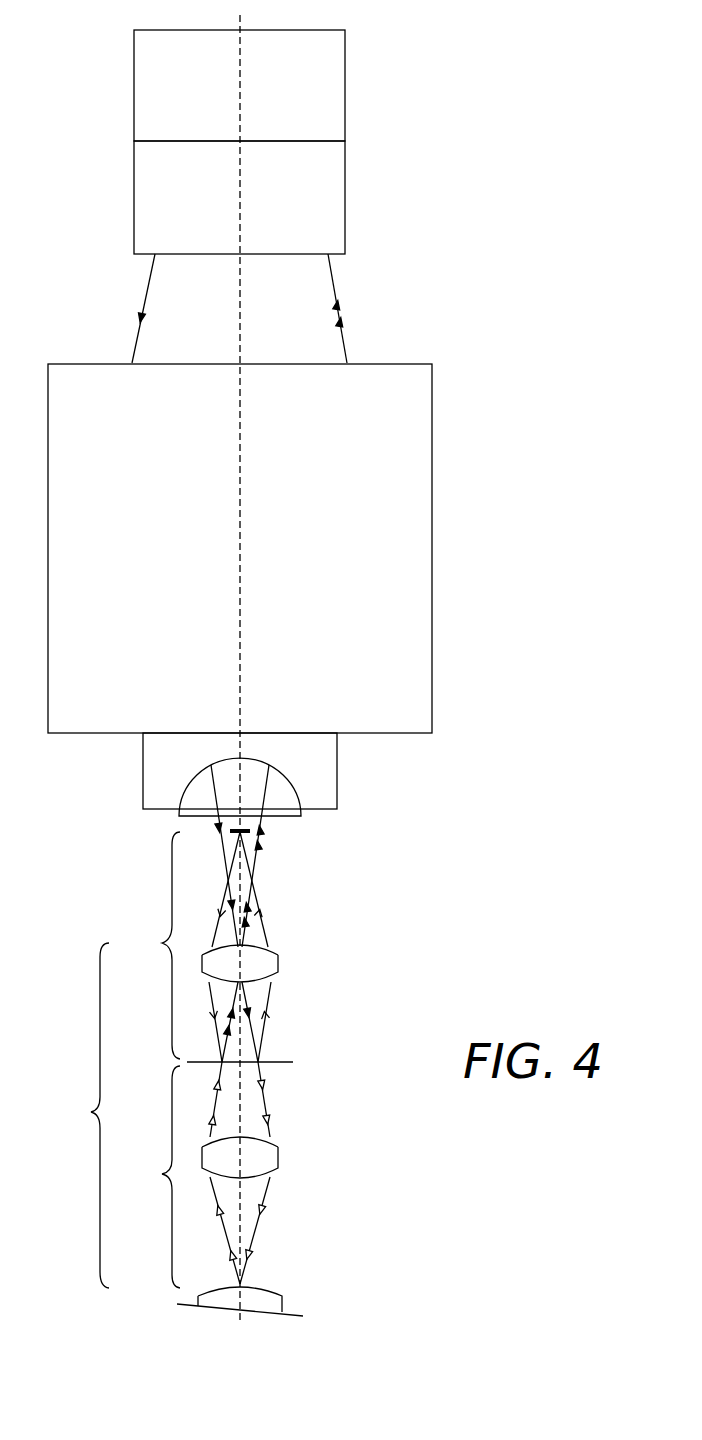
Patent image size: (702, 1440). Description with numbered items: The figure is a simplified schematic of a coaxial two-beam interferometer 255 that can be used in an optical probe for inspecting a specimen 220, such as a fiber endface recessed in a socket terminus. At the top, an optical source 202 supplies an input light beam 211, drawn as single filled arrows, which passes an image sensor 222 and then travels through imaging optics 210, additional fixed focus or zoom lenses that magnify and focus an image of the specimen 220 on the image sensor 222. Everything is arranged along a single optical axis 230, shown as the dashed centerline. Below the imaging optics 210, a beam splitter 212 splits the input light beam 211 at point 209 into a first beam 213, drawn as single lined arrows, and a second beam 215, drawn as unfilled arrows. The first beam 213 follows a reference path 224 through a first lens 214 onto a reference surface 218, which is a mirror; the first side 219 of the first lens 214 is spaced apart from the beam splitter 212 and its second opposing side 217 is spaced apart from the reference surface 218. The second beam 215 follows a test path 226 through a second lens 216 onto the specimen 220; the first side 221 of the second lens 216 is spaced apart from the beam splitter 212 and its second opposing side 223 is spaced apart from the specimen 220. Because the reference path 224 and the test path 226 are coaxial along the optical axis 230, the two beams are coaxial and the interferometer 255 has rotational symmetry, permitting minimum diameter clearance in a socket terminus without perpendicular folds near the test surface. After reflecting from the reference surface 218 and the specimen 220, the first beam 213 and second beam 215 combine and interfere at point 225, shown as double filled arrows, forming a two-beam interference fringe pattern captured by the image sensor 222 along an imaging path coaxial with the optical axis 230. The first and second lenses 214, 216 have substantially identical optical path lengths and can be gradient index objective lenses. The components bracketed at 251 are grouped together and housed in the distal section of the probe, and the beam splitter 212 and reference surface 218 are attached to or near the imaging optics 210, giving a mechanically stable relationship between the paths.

The optical source 202 is at (239, 85).
The image sensor 222 is at (239, 197).
The imaging optics 210 is at (240, 548).
The optical axis 230 is at (242, 677).
The reference surface 218 is at (251, 830).
The input light beam 211 is at (224, 854).
The second opposing side of first lens 217 is at (257, 943).
The first lens 214 is at (278, 962).
The first side of first lens 219 is at (213, 985).
The first beam 213 is at (272, 996).
The beam splitter 212 is at (293, 1062).
The point 209 is at (261, 1066).
The second beam 215 is at (265, 1101).
The first side of second lens 221 is at (260, 1139).
The second lens 216 is at (278, 1157).
The second opposing side of second lens 223 is at (213, 1180).
The point 225 is at (214, 1066).
The specimen 220 is at (253, 1286).
The reference path 224 is at (148, 945).
The test path 226 is at (148, 1177).
The grouping of components 251 is at (78, 1115).
The coaxial two-beam interferometer 255 is at (487, 84).